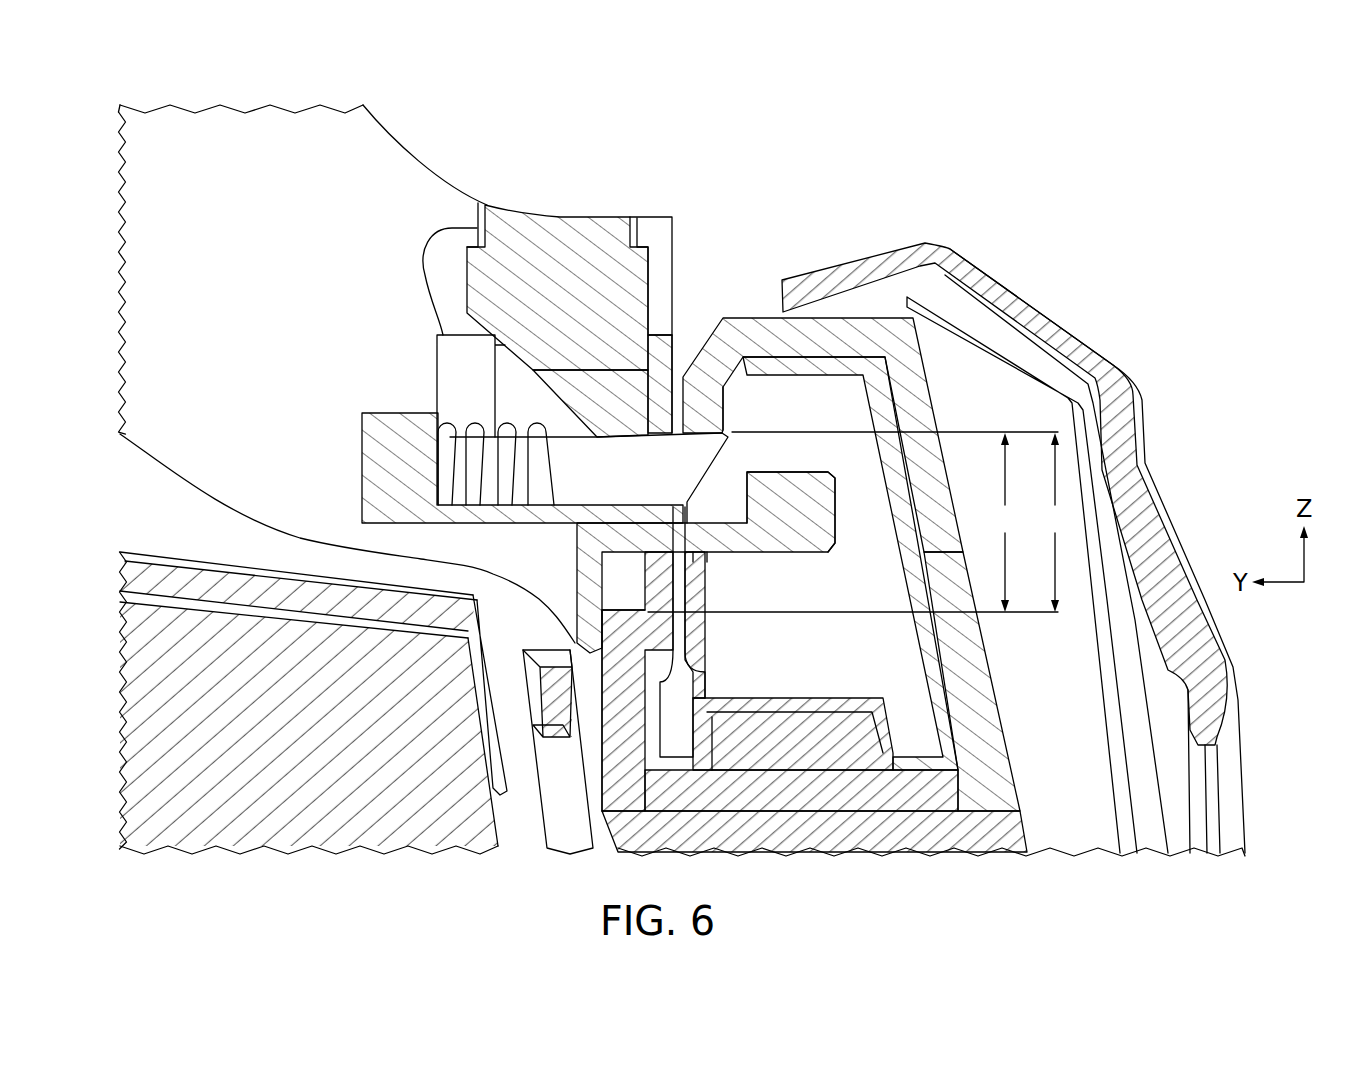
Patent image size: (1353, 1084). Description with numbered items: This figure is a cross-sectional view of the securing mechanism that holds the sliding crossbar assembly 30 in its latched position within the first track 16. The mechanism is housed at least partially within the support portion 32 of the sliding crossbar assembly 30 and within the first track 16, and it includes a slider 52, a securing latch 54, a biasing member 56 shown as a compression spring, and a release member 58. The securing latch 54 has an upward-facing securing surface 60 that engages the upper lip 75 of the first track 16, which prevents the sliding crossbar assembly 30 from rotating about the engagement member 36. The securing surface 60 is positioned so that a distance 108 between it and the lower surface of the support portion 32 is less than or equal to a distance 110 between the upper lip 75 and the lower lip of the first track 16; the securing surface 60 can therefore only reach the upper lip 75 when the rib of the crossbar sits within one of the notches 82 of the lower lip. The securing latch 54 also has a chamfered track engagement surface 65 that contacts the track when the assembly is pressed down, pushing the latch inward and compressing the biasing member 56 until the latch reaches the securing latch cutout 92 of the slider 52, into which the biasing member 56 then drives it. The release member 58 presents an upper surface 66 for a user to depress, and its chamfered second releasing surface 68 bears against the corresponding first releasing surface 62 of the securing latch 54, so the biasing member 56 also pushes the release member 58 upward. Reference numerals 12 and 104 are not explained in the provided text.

The aircraft skin / fuselage panel 12 is at (154, 641).
The first track 16 is at (763, 317).
The sliding crossbar assembly 30 is at (478, 152).
The support portion 32 is at (414, 167).
The engagement member 36 is at (793, 550).
The slider 52 is at (900, 667).
The securing latch 54 is at (522, 397).
The biasing member 56 is at (468, 473).
The release member 58 is at (558, 233).
The securing surface 60 is at (667, 378).
The first releasing surface 62 is at (570, 402).
The track engagement surface 65 is at (730, 483).
The upper surface 66 is at (607, 217).
The second releasing surface 68 is at (483, 327).
The upper lip 75 is at (725, 400).
The notches 82 is at (622, 683).
The securing latch cutout 92 is at (717, 513).
The outer seal 104 is at (985, 216).
The distance 108 is at (853, 522).
The distance 110 is at (1056, 522).